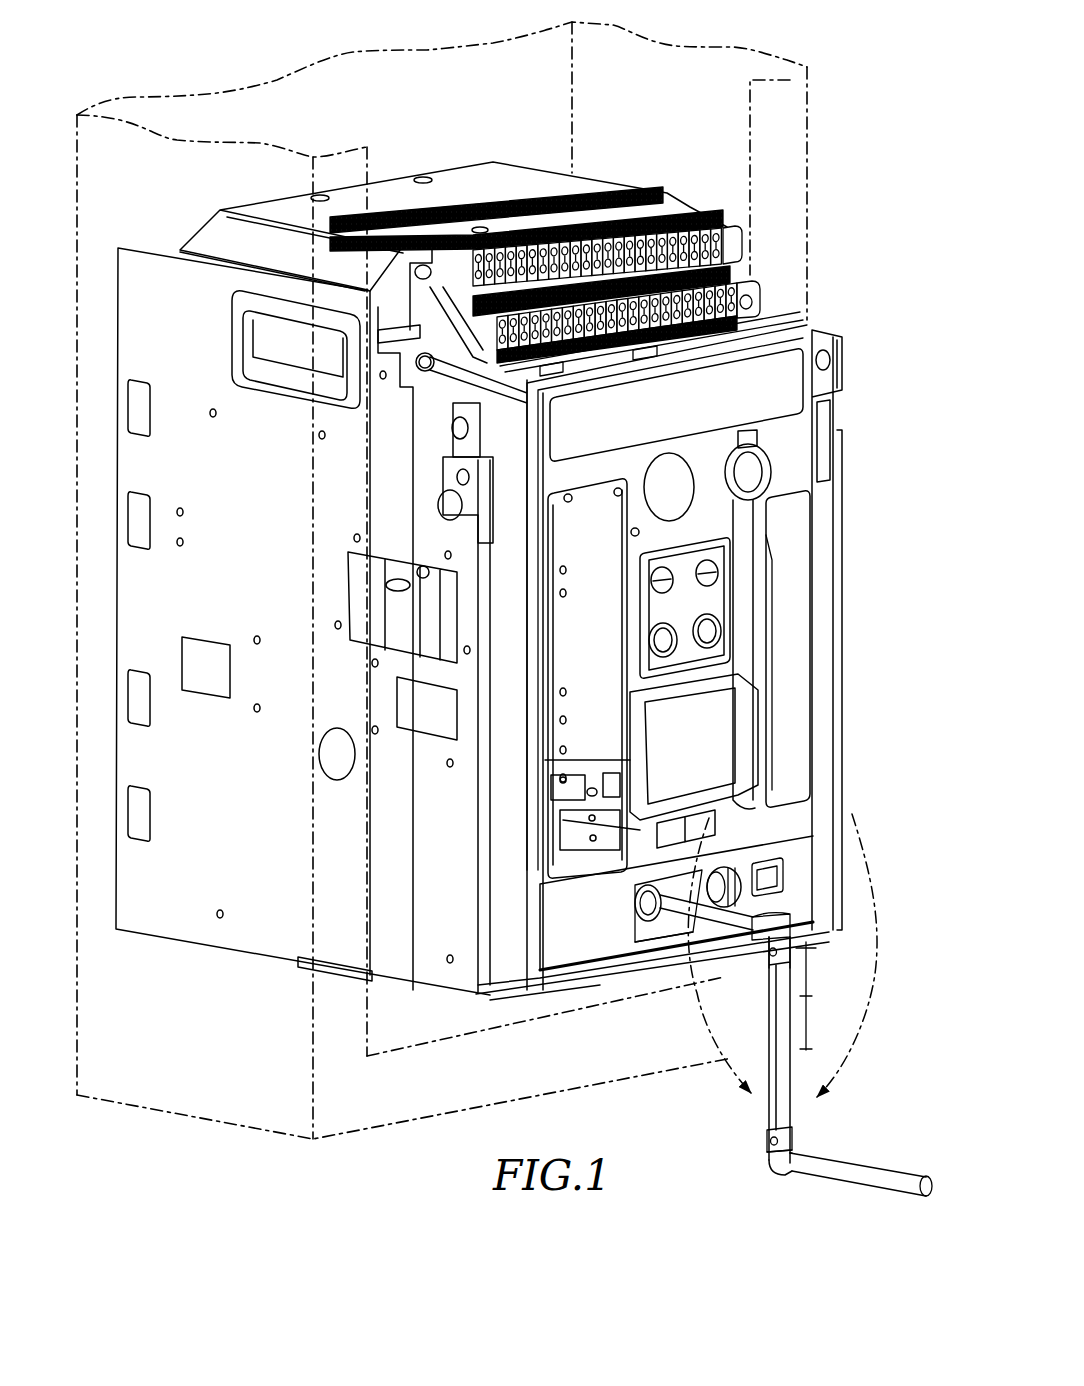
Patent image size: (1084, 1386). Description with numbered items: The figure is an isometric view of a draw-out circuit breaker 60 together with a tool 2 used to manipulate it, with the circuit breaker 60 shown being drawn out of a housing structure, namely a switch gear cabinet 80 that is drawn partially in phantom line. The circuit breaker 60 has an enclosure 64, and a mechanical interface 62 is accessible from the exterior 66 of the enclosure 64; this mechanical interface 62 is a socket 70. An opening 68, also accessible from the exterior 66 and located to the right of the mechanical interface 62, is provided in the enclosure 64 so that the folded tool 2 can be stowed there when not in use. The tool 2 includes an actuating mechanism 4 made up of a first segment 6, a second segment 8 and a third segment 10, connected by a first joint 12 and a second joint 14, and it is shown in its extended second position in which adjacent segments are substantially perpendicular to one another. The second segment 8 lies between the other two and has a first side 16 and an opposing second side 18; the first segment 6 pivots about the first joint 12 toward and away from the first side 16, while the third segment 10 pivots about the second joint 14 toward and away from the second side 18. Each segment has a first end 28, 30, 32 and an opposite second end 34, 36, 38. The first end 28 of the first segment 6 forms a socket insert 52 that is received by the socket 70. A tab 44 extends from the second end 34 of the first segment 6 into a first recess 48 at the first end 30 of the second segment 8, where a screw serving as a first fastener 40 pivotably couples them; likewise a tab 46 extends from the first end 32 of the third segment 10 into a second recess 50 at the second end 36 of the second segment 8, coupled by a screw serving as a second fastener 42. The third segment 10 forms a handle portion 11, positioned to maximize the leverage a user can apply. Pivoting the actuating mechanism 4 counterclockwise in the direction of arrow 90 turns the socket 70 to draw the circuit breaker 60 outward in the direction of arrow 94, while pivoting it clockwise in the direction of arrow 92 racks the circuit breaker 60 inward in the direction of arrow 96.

The tool 2 is at (713, 1151).
The actuating mechanism 4 is at (798, 1058).
The first segment 6 is at (684, 915).
The second segment 8 is at (791, 1013).
The third segment 10 is at (863, 1165).
The handle portion 11 is at (866, 1190).
The first joint 12 is at (775, 918).
The second joint 14 is at (771, 1161).
The first side 16 is at (759, 1068).
The second side 18 is at (791, 981).
The first end of first segment 28 is at (647, 938).
The first end of second segment 30 is at (815, 954).
The first end of third segment 32 is at (790, 1186).
The second end of first segment 34 is at (745, 962).
The second end of second segment 36 is at (806, 1142).
The second end of third segment 38 is at (926, 1207).
The first fastener 40 is at (768, 958).
The second fastener 42 is at (768, 1141).
The tab 44 is at (775, 977).
The tab 46 is at (775, 1132).
The first recess 48 is at (775, 926).
The second recess 50 is at (790, 1131).
The socket insert 52 is at (640, 907).
The circuit breaker 60 is at (530, 996).
The mechanical interface 62 is at (631, 899).
The enclosure 64 is at (800, 437).
The exterior 66 is at (807, 528).
The opening 68 is at (660, 885).
The socket 70 is at (656, 888).
The switch gear cabinet 80 is at (231, 1130).
The arrow 90 is at (712, 1049).
The arrow 92 is at (868, 838).
The arrow 94 is at (473, 911).
The arrow 96 is at (365, 894).